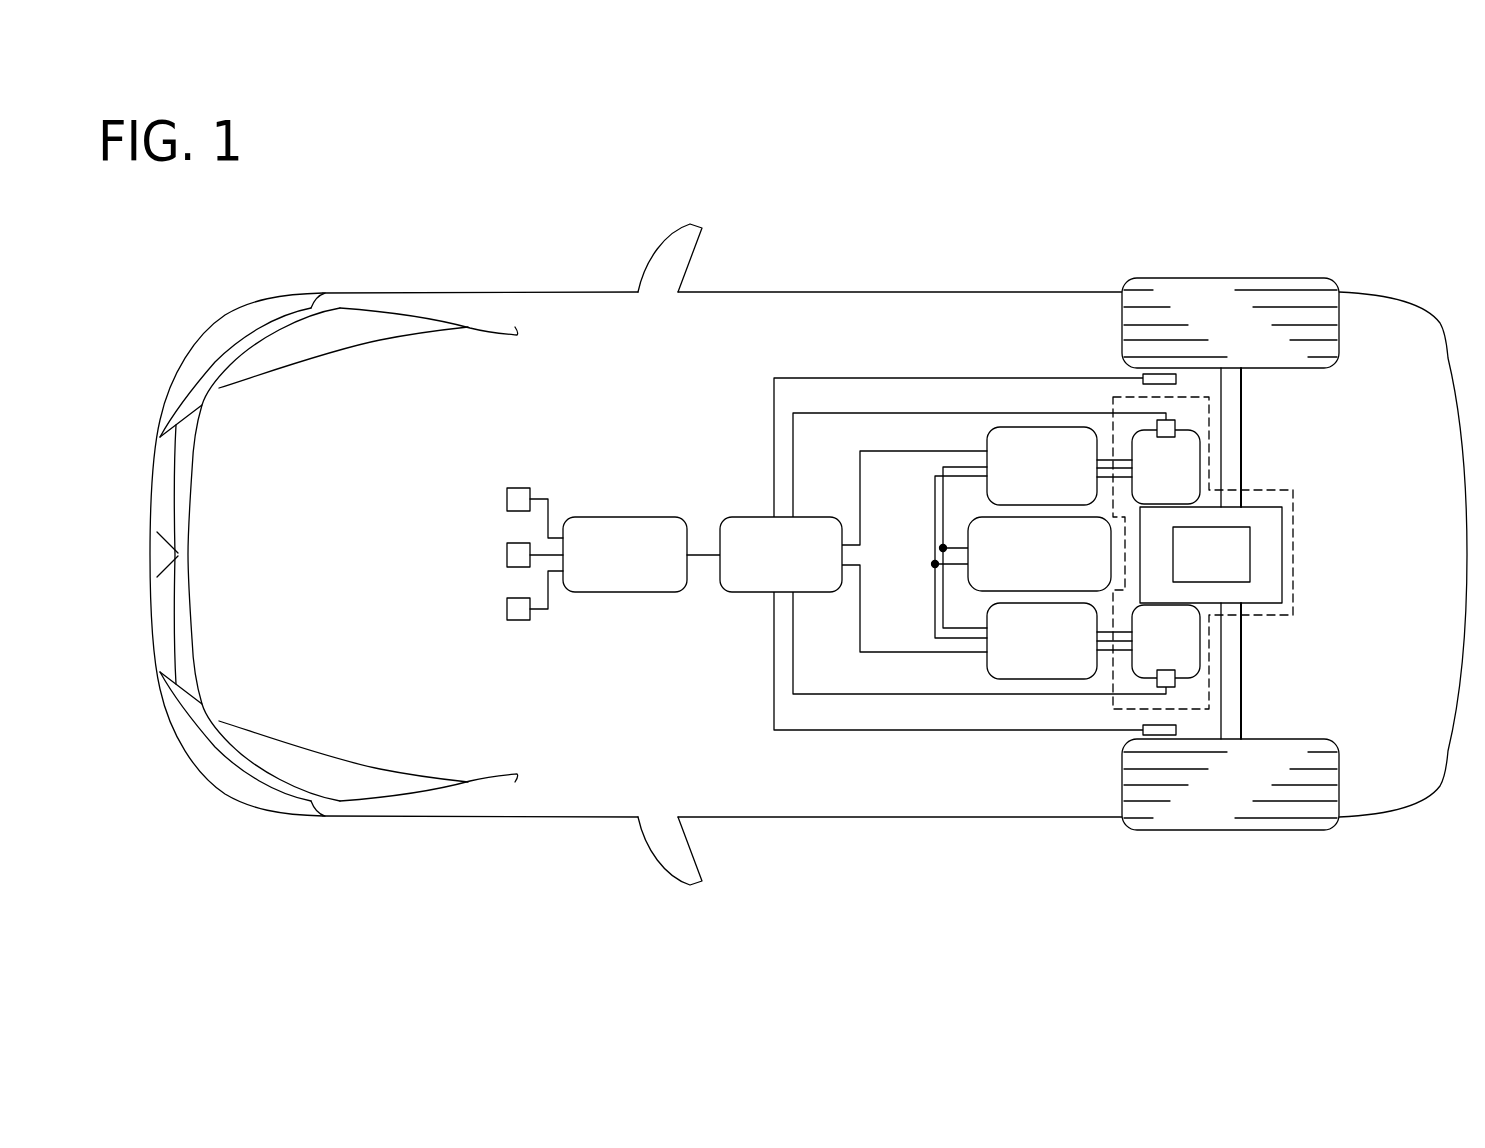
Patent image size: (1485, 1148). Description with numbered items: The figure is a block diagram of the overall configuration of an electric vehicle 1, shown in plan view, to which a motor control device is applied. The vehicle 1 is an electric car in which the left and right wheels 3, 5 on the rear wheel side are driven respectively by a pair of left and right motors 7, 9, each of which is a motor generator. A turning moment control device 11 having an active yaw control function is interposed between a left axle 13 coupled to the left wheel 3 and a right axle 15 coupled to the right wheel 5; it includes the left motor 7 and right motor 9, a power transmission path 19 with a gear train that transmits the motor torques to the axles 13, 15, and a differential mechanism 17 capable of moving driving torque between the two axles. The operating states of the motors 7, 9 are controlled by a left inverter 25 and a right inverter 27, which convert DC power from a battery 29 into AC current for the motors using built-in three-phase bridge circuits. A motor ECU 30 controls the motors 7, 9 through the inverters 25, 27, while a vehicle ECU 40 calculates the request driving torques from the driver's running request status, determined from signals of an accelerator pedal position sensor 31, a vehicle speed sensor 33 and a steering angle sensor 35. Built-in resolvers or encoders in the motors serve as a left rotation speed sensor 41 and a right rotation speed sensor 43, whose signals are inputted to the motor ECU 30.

The vehicle 1 is at (950, 254).
The left wheel 3 is at (1258, 830).
The right wheel 5 is at (1250, 278).
The left motor 7 is at (1200, 634).
The right motor 9 is at (1200, 470).
The turning moment control device 11 is at (1292, 493).
The left axle 13 is at (1241, 715).
The right axle 15 is at (1241, 385).
The differential mechanism 17 is at (1250, 557).
The power transmission path 19 is at (1282, 522).
The left inverter 25 is at (1015, 679).
The right inverter 27 is at (1013, 427).
The battery 29 is at (968, 535).
The motor ECU 30 is at (739, 517).
The accelerator pedal position sensor 31 is at (507, 499).
The vehicle speed sensor 33 is at (507, 555).
The steering angle sensor 35 is at (507, 609).
The vehicle ECU 40 is at (583, 517).
The left rotation speed sensor 41 is at (1175, 683).
The right rotation speed sensor 43 is at (1175, 428).